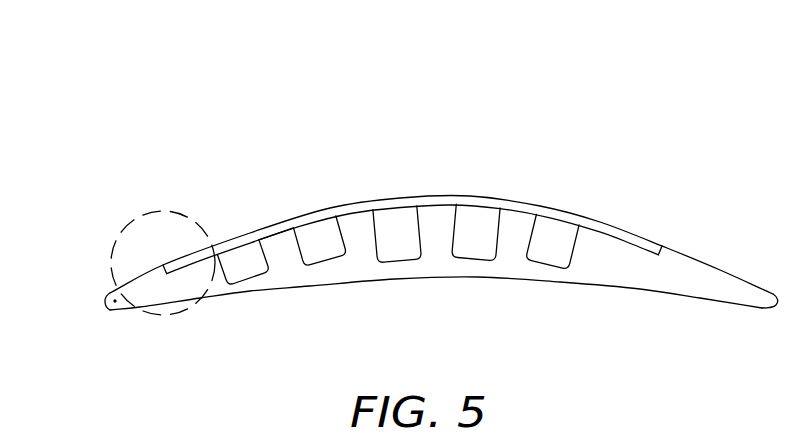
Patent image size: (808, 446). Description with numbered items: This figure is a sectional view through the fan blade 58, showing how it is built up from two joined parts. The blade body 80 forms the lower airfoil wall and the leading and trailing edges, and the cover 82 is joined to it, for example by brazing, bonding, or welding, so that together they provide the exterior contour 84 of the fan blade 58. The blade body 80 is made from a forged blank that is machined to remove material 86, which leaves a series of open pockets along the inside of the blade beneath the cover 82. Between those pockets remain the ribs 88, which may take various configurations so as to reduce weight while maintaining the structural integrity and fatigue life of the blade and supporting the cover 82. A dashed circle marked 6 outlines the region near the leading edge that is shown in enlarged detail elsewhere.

The fan blade 58 is at (441, 199).
The blade body 80 is at (635, 280).
The cover 82 is at (612, 233).
The exterior contour 84 is at (528, 197).
The material 86 is at (313, 230).
The ribs 88 is at (437, 217).
The detail region of FIG. 6 is at (157, 315).